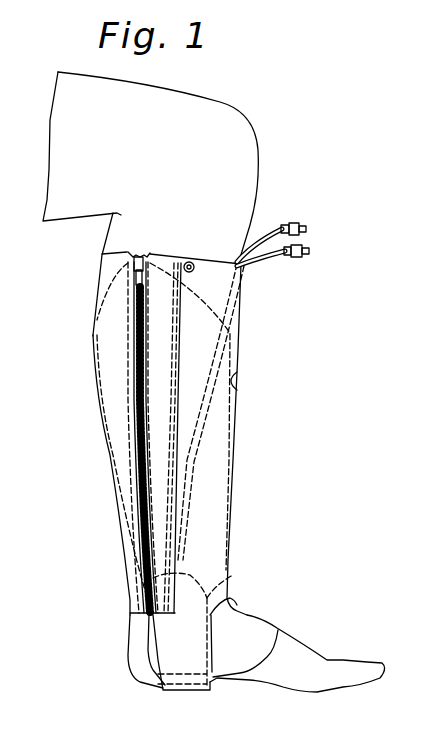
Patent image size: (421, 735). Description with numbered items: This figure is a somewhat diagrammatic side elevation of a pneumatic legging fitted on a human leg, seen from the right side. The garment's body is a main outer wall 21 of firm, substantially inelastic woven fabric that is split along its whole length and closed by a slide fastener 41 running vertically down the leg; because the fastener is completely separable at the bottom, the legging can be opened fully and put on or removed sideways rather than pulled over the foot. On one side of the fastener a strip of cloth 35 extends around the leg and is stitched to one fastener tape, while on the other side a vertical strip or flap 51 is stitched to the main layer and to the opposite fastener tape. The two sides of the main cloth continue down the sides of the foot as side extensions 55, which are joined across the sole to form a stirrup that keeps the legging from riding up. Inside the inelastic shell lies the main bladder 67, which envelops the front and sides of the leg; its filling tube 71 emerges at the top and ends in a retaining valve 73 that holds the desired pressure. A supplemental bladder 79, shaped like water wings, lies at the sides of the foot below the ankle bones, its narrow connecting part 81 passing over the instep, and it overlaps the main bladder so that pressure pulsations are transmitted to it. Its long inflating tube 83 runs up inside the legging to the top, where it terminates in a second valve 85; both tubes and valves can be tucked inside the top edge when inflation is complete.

The main outer wall 21 is at (229, 322).
The strip of cloth 35 is at (112, 342).
The slide fastener 41 is at (135, 388).
The vertical strip or flap 51 is at (158, 427).
The side extensions 55 is at (213, 667).
The main bladder 67 is at (235, 395).
The filling tube 71 is at (248, 253).
The valve 73 is at (297, 258).
The supplemental bladder 79 is at (148, 645).
The narrow connecting part 81 is at (243, 615).
The inflating tube 83 is at (252, 233).
The valve 85 is at (288, 222).